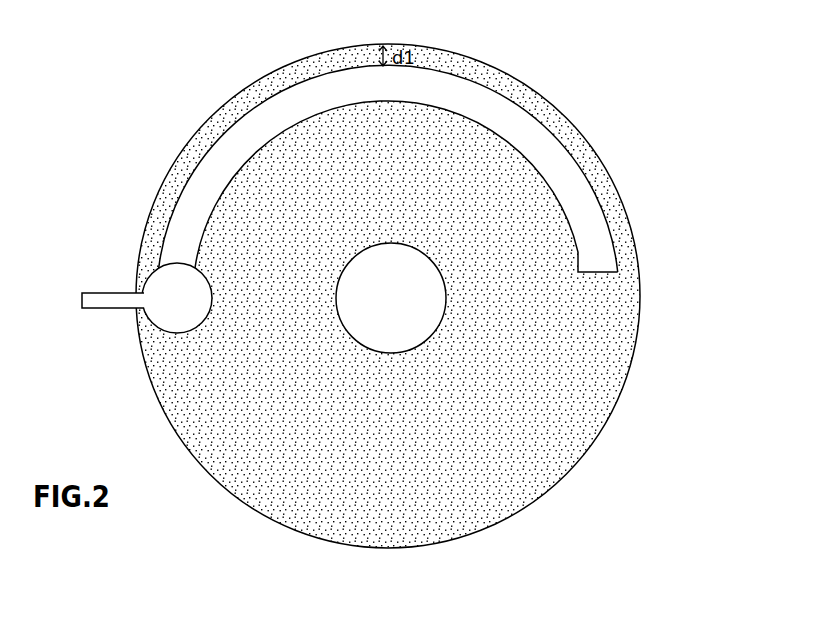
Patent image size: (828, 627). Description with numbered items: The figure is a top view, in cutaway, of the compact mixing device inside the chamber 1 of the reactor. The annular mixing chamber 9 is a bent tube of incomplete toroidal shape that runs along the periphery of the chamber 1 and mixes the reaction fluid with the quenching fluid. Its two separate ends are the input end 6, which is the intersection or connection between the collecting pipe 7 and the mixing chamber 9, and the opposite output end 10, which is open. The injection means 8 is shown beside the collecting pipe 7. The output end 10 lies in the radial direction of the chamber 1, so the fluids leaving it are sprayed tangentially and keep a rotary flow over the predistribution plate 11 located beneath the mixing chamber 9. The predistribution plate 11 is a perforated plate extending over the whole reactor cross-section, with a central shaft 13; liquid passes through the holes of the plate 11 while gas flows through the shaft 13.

The chamber of the reactor 1 is at (398, 547).
The input end 6 is at (181, 262).
The collecting pipe 7 is at (138, 267).
The injection means 8 is at (97, 293).
The annular mixing chamber 9 is at (588, 187).
The output end 10 is at (595, 273).
The predistribution plate 11 is at (551, 462).
The shaft 13 is at (427, 316).